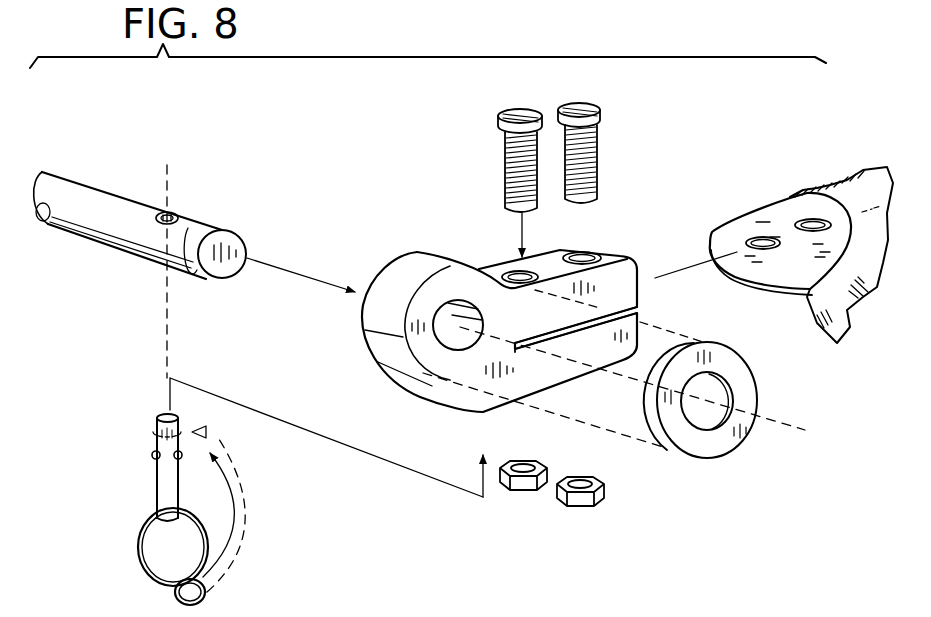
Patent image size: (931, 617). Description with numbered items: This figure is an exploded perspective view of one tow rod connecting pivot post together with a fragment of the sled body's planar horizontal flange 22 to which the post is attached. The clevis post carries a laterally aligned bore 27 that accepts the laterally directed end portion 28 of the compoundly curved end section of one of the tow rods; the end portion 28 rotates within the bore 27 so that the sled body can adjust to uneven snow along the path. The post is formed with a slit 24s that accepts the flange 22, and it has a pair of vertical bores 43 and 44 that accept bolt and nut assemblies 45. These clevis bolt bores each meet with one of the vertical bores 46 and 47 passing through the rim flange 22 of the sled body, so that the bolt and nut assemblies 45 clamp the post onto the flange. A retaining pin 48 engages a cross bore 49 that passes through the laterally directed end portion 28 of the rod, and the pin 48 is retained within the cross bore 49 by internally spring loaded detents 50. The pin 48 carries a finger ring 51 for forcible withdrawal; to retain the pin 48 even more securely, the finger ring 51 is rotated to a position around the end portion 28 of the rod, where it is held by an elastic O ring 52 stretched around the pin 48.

The horizontal flange 22 is at (727, 230).
The slit 24s is at (583, 322).
The bore 27 is at (458, 347).
The laterally directed end portion 28 is at (128, 235).
The vertical bore 43 is at (598, 250).
The vertical bore 44 is at (513, 257).
The bolt and nut assemblies 45 is at (505, 173).
The vertical bore 46 is at (827, 223).
The vertical bore 47 is at (770, 237).
The retaining pin 48 is at (158, 480).
The cross bore 49 is at (172, 212).
The spring loaded detents 50 is at (157, 453).
The finger ring 51 is at (140, 552).
The elastic O ring 52 is at (205, 600).